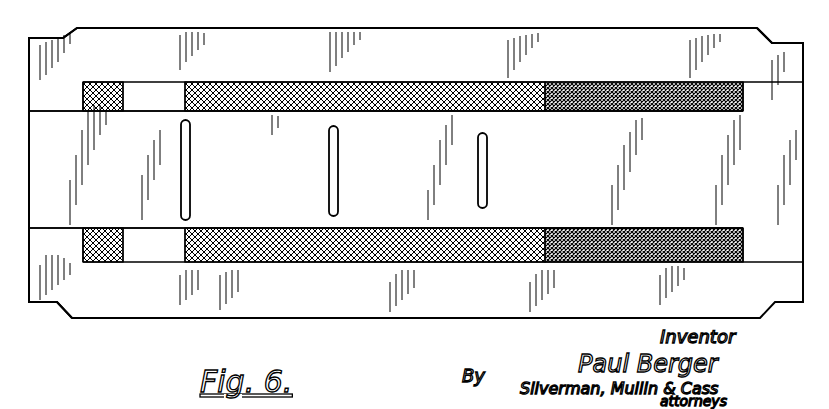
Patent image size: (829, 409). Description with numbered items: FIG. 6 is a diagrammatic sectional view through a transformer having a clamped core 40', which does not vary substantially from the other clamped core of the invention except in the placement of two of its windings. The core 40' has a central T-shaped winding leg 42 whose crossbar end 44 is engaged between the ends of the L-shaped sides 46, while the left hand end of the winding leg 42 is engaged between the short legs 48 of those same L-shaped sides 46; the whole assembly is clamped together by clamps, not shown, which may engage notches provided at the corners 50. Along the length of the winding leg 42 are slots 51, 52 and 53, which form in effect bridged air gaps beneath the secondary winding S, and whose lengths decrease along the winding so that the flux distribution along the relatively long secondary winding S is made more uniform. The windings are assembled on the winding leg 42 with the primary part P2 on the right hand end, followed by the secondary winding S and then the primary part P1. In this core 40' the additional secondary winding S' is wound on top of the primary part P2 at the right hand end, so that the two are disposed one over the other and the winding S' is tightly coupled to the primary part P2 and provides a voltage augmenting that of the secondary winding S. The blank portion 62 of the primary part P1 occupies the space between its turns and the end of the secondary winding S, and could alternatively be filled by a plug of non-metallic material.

The core 40' is at (416, 192).
The central T-shaped winding leg 42 is at (386, 169).
The crossbar end 44 is at (792, 185).
The L-shaped sides 46 is at (412, 308).
The short legs 48 is at (45, 52).
The corners 50 is at (70, 36).
The slot 51 is at (188, 190).
The slot 52 is at (336, 195).
The slot 53 is at (486, 191).
The blank portion 62 is at (178, 262).
The primary part P1 is at (108, 262).
The primary part P2 is at (602, 82).
The secondary winding S is at (365, 291).
The additional secondary winding S' is at (423, 80).